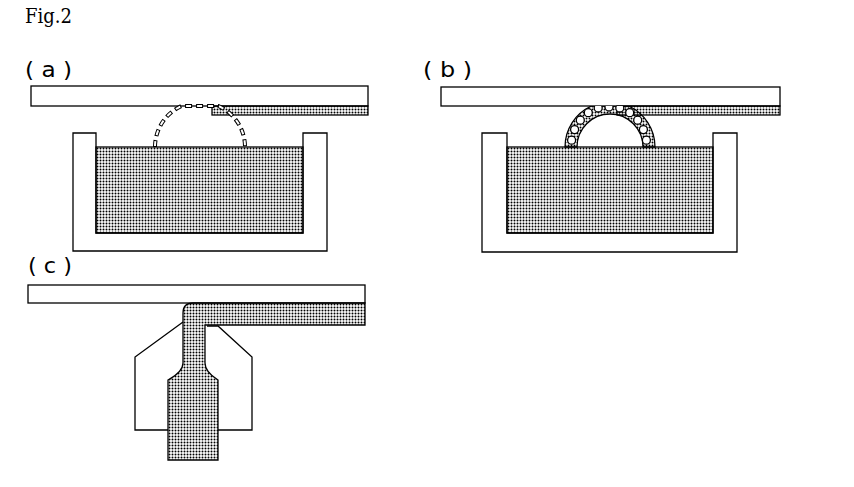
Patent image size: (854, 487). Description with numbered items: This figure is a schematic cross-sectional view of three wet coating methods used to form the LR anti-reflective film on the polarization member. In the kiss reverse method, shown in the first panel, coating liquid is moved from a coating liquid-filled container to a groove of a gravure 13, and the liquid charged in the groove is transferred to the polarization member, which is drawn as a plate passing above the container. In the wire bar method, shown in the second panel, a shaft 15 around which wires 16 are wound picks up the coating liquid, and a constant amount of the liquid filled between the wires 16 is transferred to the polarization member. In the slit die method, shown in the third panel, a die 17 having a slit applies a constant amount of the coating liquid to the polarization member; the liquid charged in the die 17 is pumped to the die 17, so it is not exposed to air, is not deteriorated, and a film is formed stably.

The gravure 13 is at (172, 112).
The shaft 15 is at (615, 122).
The wires 16 is at (595, 107).
The die 17 is at (242, 397).